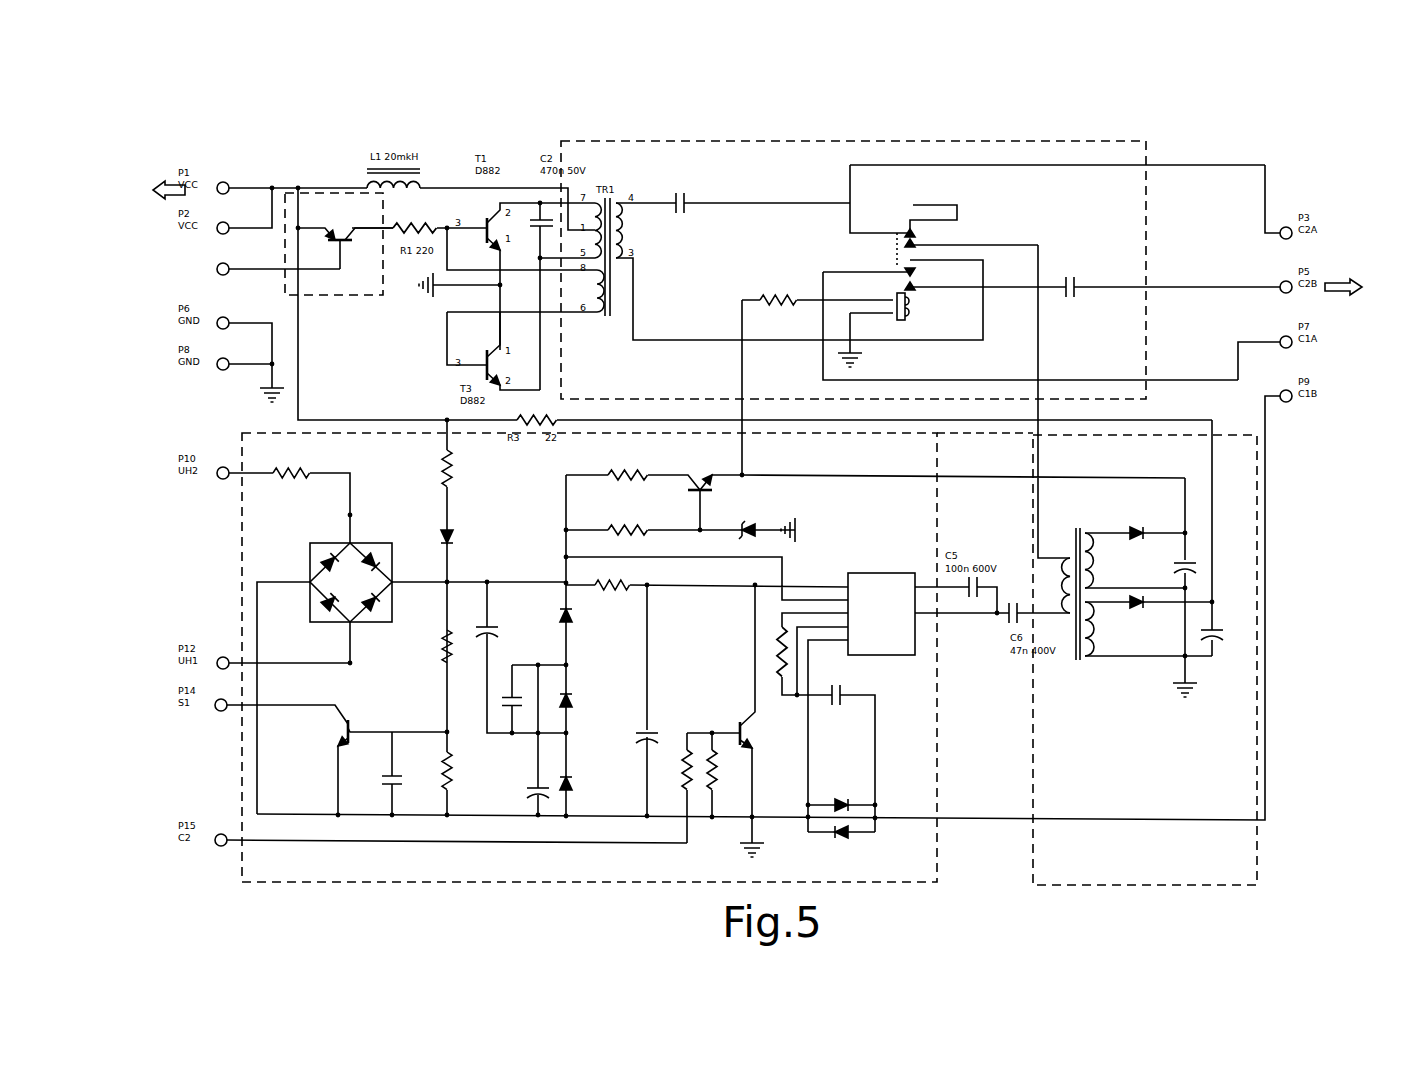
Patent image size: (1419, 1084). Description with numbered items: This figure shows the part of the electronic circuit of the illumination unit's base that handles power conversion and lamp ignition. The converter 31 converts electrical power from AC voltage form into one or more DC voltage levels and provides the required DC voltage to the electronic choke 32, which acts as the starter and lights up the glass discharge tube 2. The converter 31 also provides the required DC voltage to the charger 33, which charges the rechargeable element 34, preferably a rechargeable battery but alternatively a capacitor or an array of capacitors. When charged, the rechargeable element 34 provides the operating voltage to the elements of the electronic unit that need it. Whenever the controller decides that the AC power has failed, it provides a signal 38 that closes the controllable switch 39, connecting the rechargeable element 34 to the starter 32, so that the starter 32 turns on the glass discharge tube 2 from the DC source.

The glass discharge tube 2 is at (1372, 288).
The converter 31 is at (238, 527).
The electronic choke 32 is at (855, 141).
The charger 33 is at (1258, 563).
The rechargeable element 34 is at (138, 218).
The signal 38 is at (247, 271).
The controllable switch 39 is at (358, 297).